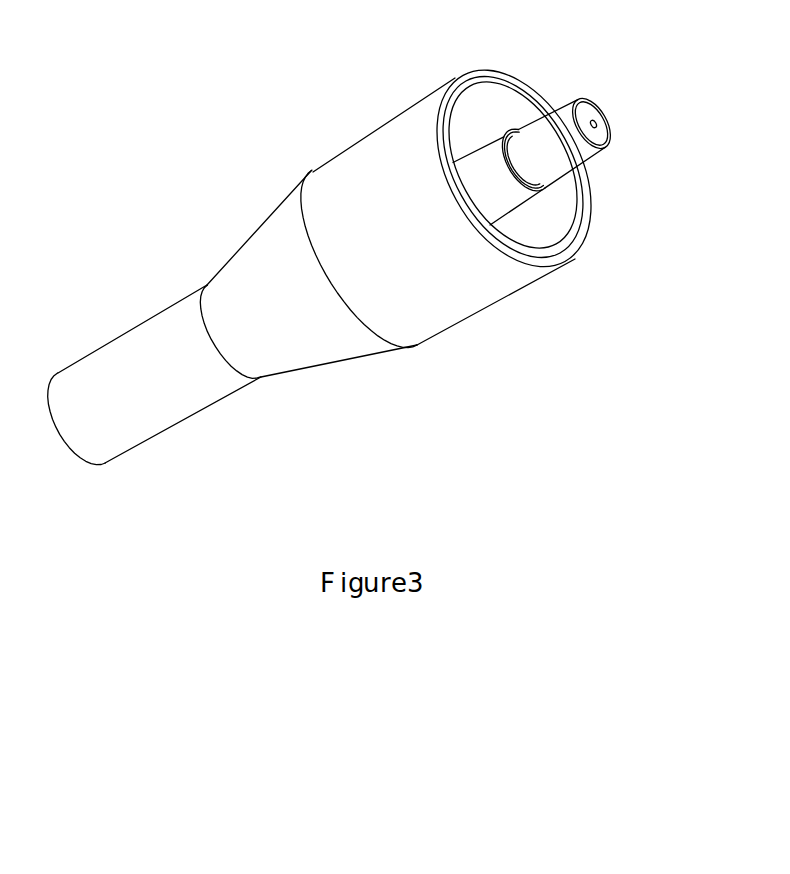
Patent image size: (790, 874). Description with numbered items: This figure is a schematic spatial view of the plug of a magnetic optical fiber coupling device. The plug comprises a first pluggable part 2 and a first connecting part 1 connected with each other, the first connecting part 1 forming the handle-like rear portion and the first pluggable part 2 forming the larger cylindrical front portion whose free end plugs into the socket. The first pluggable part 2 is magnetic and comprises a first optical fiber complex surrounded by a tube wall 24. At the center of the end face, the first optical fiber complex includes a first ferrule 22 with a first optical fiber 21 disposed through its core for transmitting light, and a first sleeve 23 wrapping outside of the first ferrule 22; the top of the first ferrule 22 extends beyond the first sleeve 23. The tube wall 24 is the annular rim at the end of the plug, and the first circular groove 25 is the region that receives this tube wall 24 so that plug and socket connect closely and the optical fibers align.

The first connecting part 1 is at (188, 372).
The first pluggable part 2 is at (403, 295).
The first optical fiber 21 is at (595, 117).
The first ferrule 22 is at (602, 133).
The first sleeve 23 is at (541, 188).
The tube wall 24 is at (589, 212).
The first circular groove 25 is at (493, 106).